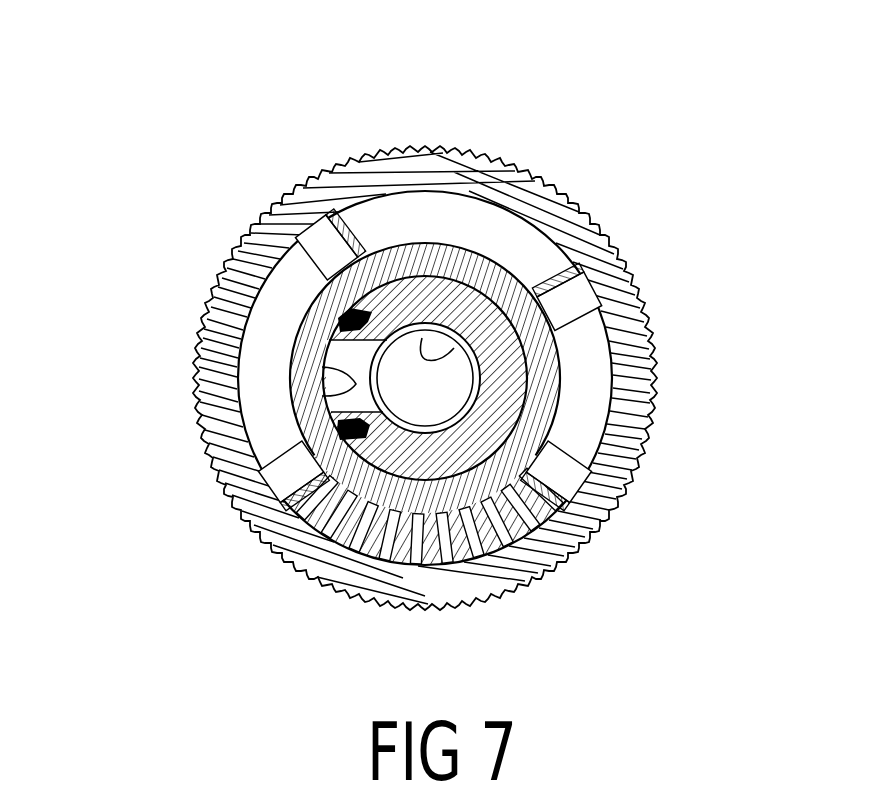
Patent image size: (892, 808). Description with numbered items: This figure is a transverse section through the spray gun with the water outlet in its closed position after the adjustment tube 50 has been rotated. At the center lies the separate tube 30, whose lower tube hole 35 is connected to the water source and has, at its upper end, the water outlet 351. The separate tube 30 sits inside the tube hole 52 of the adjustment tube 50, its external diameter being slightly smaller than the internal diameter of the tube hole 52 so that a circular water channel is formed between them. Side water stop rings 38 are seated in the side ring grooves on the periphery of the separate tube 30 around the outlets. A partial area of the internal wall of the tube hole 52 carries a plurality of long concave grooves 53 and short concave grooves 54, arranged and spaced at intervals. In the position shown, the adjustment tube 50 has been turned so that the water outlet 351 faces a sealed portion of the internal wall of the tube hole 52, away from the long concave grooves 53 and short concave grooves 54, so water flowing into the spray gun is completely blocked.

The separate tube 30 is at (520, 345).
The lower tube hole 35 is at (422, 338).
The side water stop rings 38 is at (343, 360).
The water outlet 351 is at (345, 362).
The adjustment tube 50 is at (633, 406).
The tube hole 52 is at (352, 394).
The long concave grooves 53 is at (410, 527).
The short concave grooves 54 is at (462, 527).